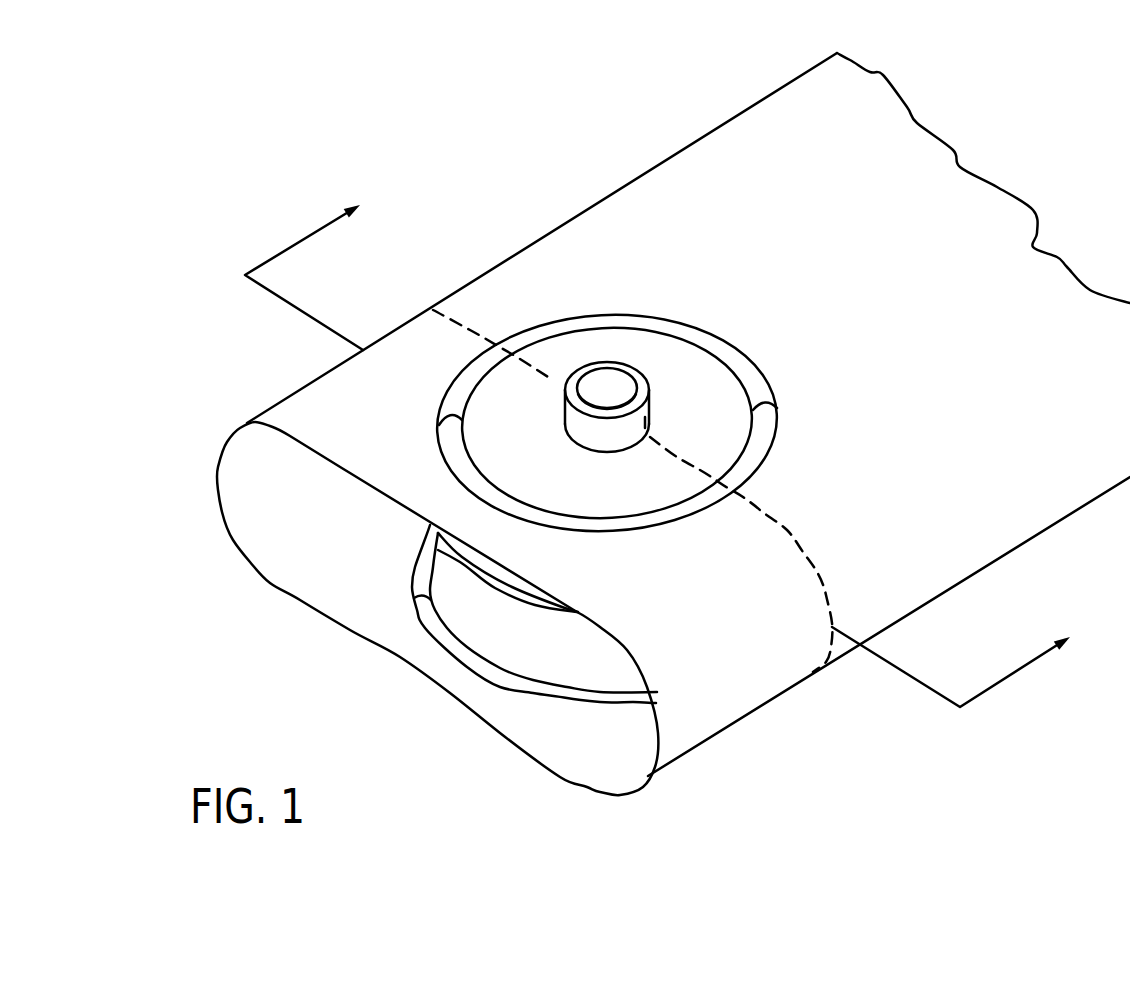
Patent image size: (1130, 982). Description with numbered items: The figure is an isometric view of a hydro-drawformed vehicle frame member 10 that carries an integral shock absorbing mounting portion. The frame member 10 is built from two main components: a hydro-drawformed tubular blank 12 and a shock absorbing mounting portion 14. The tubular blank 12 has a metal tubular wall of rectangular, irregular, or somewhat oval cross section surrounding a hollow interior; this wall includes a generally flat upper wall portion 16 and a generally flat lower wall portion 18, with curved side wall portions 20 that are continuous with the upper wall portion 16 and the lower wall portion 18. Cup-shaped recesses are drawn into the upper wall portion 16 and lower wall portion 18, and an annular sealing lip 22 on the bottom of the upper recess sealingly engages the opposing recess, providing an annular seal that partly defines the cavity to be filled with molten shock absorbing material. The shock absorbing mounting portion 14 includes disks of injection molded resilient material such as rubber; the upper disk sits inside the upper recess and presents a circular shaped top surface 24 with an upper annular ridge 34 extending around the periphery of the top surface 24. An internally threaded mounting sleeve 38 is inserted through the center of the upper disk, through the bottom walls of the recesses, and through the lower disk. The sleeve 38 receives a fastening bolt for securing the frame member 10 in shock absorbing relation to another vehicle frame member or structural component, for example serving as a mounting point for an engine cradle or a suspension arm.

The hydro-drawformed vehicle frame member 10 is at (362, 123).
The hydro-drawformed tubular blank 12 is at (738, 105).
The shock absorbing mounting portion 14 is at (637, 487).
The upper wall portion 16 is at (645, 215).
The lower wall portion 18 is at (570, 740).
The curved side wall portions 20 is at (217, 482).
The annular sealing lip 22 is at (460, 560).
The top surface 24 is at (257, 523).
The upper annular ridge 34 is at (763, 442).
The internally threaded mounting sleeve 38 is at (582, 369).